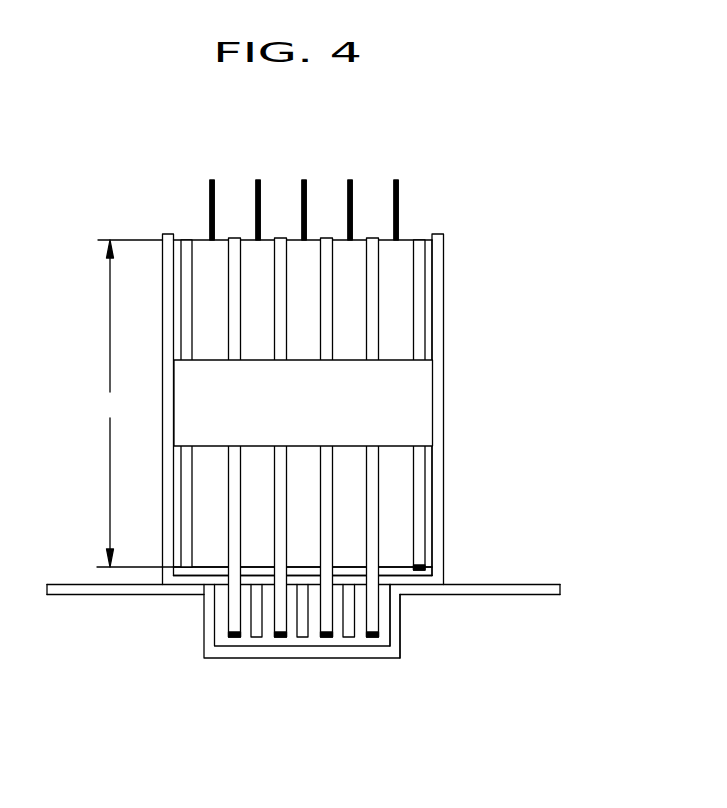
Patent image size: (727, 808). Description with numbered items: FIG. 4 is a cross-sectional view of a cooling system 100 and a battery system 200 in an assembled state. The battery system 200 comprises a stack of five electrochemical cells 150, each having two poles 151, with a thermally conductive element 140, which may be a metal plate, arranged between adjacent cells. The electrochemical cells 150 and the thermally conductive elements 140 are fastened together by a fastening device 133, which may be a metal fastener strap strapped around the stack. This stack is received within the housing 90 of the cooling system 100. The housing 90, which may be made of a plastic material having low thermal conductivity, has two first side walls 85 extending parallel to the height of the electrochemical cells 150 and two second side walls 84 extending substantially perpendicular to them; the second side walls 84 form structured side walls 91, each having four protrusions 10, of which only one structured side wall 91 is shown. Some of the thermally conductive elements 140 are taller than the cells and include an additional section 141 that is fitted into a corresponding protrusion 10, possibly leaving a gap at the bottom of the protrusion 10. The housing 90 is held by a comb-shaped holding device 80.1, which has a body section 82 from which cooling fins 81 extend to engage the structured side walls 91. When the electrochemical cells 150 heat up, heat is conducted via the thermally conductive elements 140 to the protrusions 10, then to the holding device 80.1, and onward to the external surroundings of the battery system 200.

The battery system 200 is at (440, 212).
The cooling system 100 is at (462, 255).
The protrusion 10 is at (267, 645).
The electrochemical cell 150 is at (396, 268).
The pole 151 is at (217, 192).
The first side wall 85 is at (162, 408).
The housing 90 is at (437, 345).
The fastening device 133 is at (323, 418).
The thermally conductive element 140 is at (419, 495).
The second side wall 84 is at (390, 583).
The structured side wall 91 is at (303, 571).
The holding device 80.1 is at (552, 588).
The section 141 is at (413, 607).
The body section 82 is at (402, 655).
The cooling fin 81 is at (350, 623).